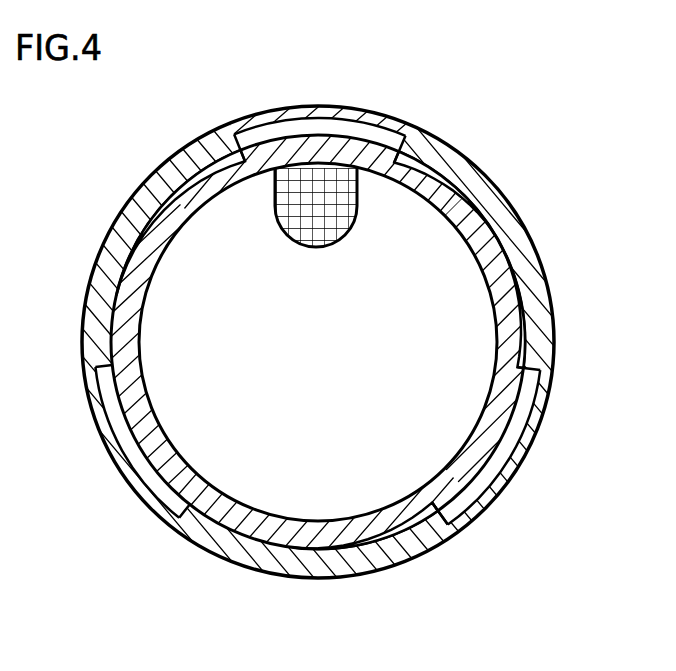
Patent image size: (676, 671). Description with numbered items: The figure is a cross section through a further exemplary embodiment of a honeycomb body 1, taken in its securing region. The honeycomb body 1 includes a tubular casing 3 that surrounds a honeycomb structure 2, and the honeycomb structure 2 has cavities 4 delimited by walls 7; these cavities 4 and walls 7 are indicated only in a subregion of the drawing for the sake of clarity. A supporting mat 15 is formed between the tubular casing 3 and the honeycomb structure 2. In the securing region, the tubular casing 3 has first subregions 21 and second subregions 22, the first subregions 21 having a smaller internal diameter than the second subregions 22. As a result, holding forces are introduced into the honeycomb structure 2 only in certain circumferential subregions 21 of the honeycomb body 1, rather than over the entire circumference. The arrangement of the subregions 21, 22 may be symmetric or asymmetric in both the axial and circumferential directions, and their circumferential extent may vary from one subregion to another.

The honeycomb body 1 is at (479, 128).
The honeycomb structure 2 is at (403, 443).
The tubular casing 3 is at (547, 295).
The cavities 4 is at (314, 178).
The walls 7 is at (336, 178).
The supporting mat 15 is at (433, 503).
The first subregions 21 is at (330, 336).
The second subregions 22 is at (262, 118).